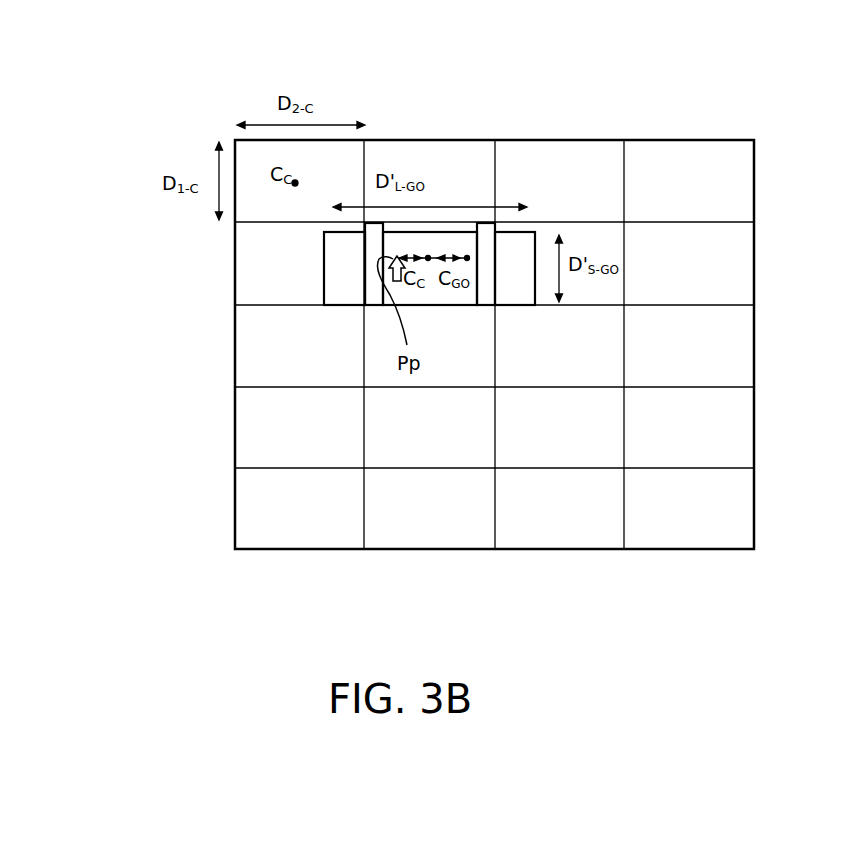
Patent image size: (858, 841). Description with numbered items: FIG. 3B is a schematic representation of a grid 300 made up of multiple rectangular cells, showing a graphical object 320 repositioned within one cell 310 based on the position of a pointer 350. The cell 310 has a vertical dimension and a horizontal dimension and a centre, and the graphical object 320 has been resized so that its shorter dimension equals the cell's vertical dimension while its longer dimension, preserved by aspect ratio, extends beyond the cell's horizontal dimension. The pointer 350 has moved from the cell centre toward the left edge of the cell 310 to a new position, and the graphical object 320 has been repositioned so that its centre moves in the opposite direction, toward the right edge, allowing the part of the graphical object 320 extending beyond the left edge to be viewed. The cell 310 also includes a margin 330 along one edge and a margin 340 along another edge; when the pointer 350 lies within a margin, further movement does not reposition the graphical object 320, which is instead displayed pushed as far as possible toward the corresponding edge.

The grid 300 is at (86, 50).
The cell 310 is at (383, 300).
The graphical object 320 is at (447, 232).
The margin 330 is at (375, 240).
The margin 340 is at (481, 244).
The pointer 350 is at (395, 280).